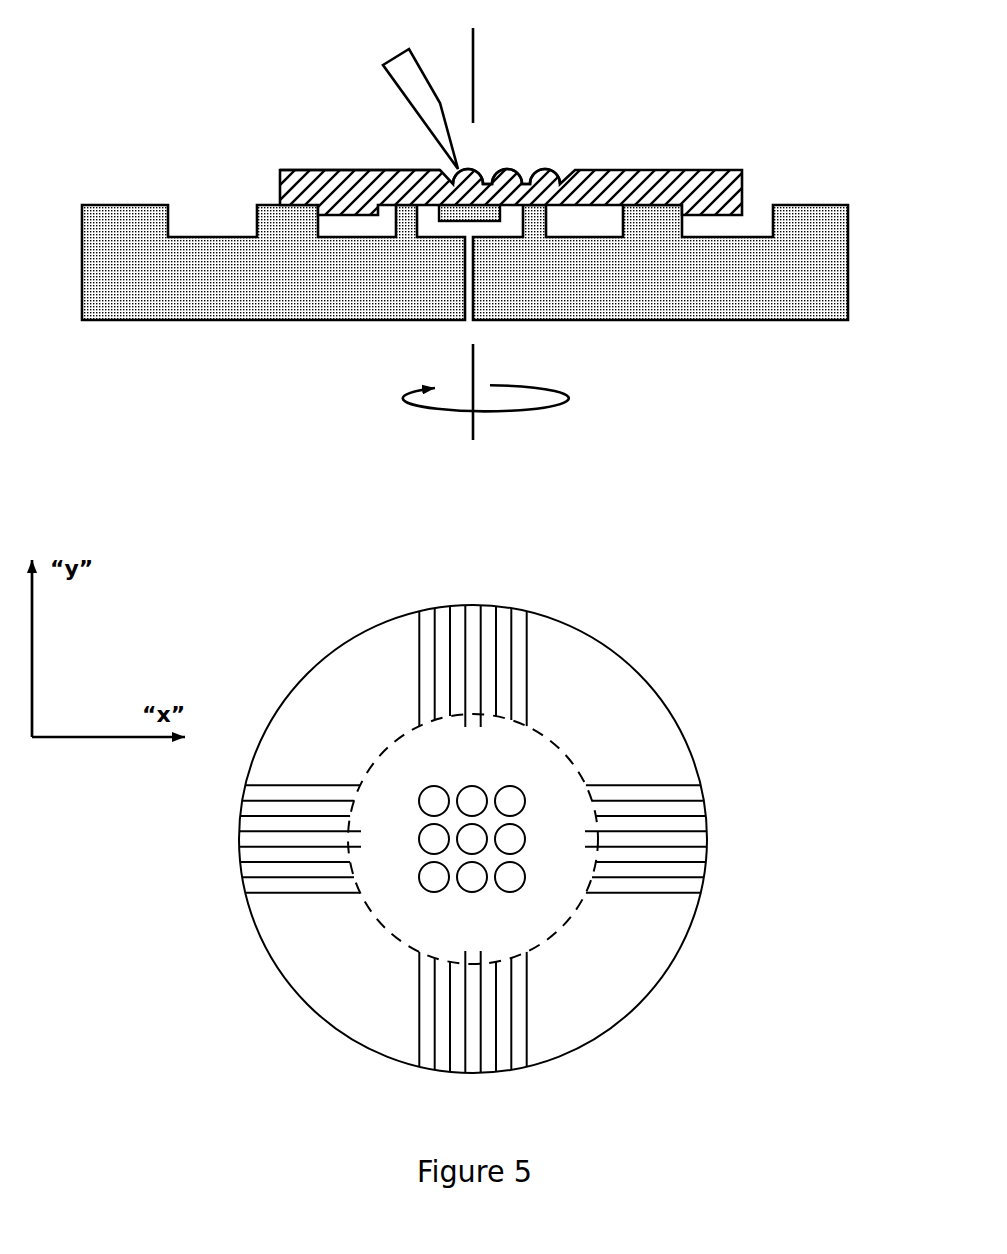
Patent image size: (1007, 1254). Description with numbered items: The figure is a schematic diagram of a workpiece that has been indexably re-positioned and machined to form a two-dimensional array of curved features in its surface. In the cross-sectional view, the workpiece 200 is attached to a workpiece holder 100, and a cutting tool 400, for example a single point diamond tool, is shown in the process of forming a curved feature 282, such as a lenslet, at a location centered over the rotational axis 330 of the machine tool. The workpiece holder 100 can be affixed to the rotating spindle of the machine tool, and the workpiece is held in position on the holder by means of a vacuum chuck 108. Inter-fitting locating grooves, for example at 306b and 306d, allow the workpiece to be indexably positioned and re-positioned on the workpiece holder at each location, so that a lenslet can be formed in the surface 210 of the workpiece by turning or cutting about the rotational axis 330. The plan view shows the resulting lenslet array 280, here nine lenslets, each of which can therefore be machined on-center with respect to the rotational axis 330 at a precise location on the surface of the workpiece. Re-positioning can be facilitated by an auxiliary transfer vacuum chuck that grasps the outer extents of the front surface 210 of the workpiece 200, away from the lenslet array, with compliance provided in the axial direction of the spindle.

The workpiece holder 100 is at (764, 297).
The vacuum chuck 108 is at (422, 250).
The workpiece 200 is at (742, 169).
The surface of the workpiece 210 is at (418, 146).
The lenslet array 280 is at (408, 891).
The curved feature 282 is at (486, 161).
The locating groove 306b is at (281, 244).
The locating groove 306d is at (652, 244).
The rotational axis 330 is at (477, 80).
The cutting tool 400 is at (403, 73).